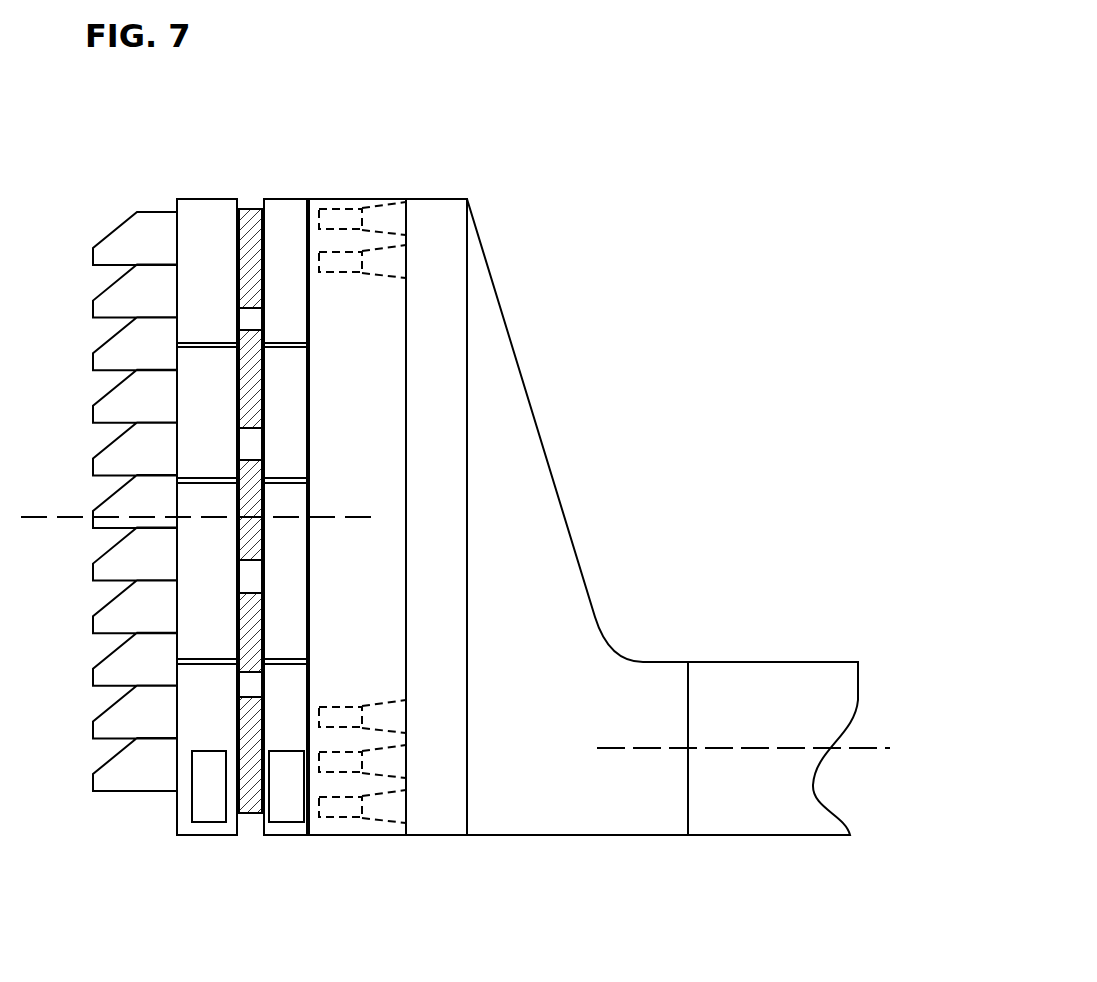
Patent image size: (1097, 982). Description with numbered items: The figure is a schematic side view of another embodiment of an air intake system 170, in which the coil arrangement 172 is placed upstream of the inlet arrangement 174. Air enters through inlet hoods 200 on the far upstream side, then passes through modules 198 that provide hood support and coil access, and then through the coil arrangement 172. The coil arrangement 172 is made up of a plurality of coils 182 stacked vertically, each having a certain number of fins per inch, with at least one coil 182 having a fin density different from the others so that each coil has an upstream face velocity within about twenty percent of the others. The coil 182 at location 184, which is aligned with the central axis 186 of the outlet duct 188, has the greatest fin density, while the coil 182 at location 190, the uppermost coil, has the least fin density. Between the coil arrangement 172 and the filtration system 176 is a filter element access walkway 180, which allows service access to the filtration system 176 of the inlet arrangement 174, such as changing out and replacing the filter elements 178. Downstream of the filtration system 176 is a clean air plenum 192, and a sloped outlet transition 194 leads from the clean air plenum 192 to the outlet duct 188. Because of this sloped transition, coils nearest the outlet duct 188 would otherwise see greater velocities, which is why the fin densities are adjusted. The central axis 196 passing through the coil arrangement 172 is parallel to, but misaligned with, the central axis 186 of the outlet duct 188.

The air intake system 170 is at (567, 118).
The coil arrangement 172 is at (252, 206).
The inlet arrangement 174 is at (467, 842).
The filtration system 176 is at (368, 198).
The filter elements 178 is at (397, 240).
The filter element access walkway 180 is at (293, 198).
The coils 182 is at (258, 208).
The location 184 is at (255, 805).
The central axis 186 is at (635, 748).
The outlet duct 188 is at (748, 660).
The location of uppermost coil 190 is at (253, 238).
The clean air plenum 192 is at (443, 350).
The outlet transition 194 is at (556, 475).
The central axis 196 is at (337, 518).
The modules 198 is at (207, 197).
The inlet hoods 200 is at (99, 222).